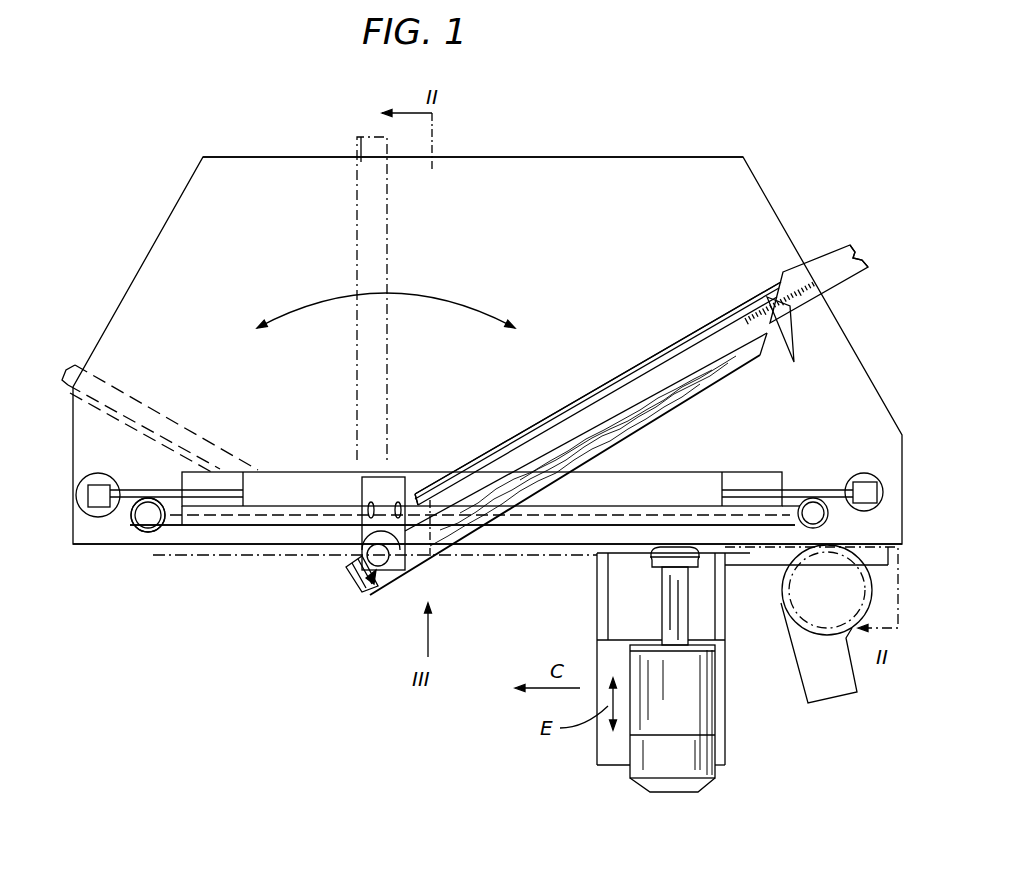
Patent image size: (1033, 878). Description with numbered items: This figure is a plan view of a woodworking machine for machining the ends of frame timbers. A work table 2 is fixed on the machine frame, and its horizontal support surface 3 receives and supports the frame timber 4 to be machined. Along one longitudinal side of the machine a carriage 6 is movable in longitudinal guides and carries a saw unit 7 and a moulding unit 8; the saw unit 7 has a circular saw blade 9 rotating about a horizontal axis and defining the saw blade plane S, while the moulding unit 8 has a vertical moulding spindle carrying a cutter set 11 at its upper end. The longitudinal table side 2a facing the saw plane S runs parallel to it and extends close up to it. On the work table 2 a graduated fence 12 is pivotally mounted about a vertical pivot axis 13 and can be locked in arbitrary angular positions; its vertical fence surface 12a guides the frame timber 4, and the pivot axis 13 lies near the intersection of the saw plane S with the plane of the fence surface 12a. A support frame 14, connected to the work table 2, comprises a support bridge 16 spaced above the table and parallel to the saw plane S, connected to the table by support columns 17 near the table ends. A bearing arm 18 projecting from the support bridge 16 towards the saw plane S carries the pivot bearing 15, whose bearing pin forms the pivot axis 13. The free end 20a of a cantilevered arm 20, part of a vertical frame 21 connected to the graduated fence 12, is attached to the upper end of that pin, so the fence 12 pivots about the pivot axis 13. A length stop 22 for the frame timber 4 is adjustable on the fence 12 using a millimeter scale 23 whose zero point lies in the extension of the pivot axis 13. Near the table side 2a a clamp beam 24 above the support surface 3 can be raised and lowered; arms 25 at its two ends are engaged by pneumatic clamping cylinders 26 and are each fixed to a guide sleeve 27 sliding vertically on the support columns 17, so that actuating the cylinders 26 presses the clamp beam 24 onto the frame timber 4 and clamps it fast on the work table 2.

The work table 2 is at (690, 152).
The longitudinal table side 2a is at (133, 526).
The horizontal support surface 3 is at (537, 177).
The frame timber 4 is at (726, 350).
The carriage 6 is at (760, 558).
The saw unit 7 is at (652, 600).
The moulding unit 8 is at (777, 612).
The circular saw blade 9 is at (620, 556).
The cutter set 11 is at (812, 630).
The graduated fence 12 is at (829, 268).
The vertical fence surface 12a is at (838, 282).
The pivot axis 13 is at (352, 564).
The support frame 14 is at (291, 532).
The pivot bearing 15 is at (375, 588).
The support bridge 16 is at (247, 518).
The support columns 17 is at (149, 520).
The bearing arm 18 is at (345, 549).
The cantilevered arm 20 is at (568, 406).
The free end 20a is at (400, 545).
The vertical frame 21 is at (732, 303).
The length stop 22 is at (798, 338).
The millimeter scale 23 is at (795, 277).
The clamp beam 24 is at (520, 494).
The arms 25 is at (160, 490).
The pneumatic clamping cylinders 26 is at (97, 514).
The guide sleeve 27 is at (131, 526).
The saw blade plane S is at (190, 557).